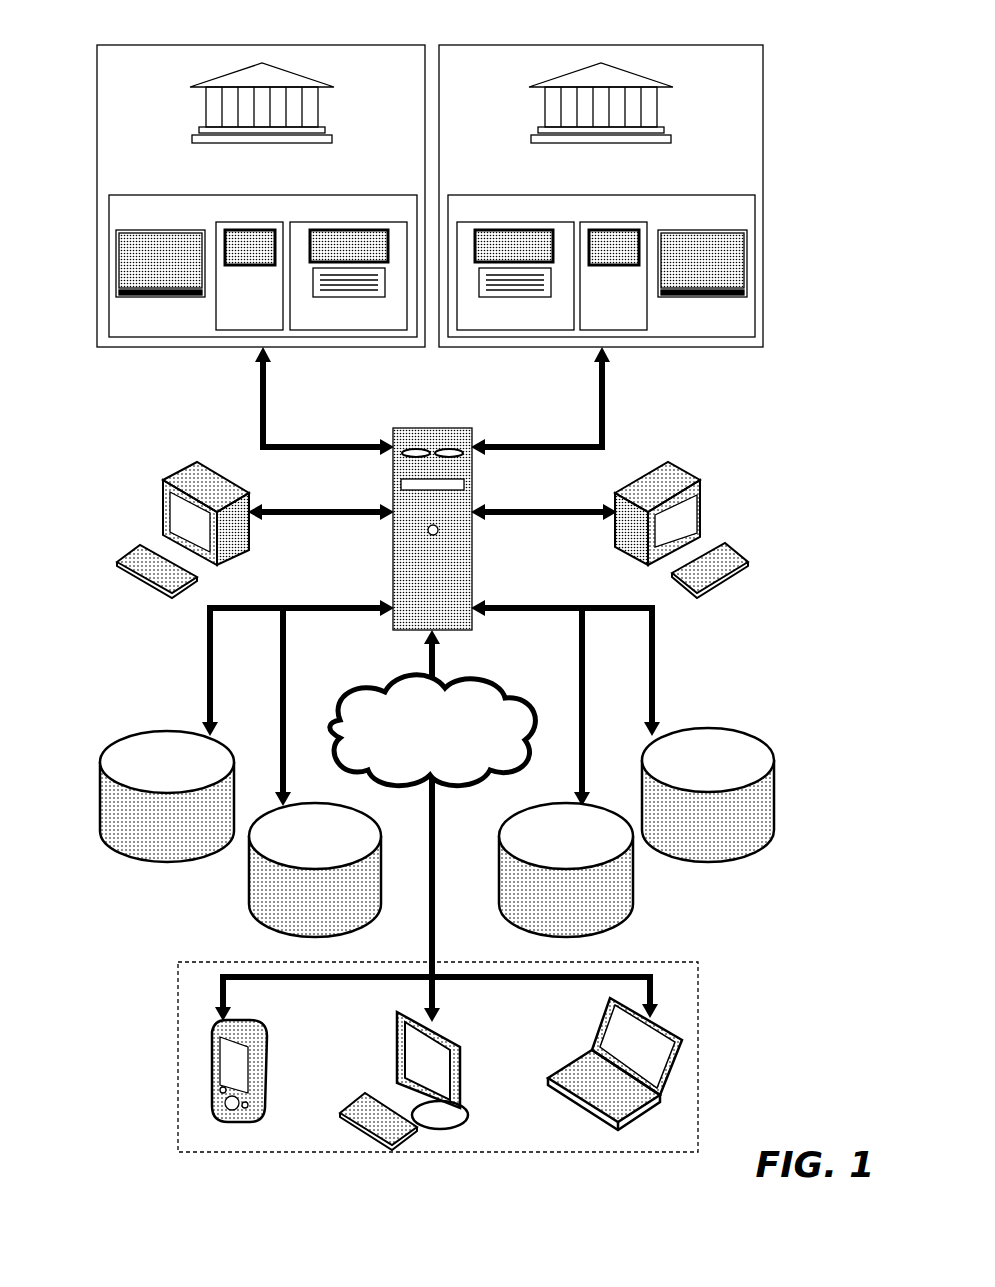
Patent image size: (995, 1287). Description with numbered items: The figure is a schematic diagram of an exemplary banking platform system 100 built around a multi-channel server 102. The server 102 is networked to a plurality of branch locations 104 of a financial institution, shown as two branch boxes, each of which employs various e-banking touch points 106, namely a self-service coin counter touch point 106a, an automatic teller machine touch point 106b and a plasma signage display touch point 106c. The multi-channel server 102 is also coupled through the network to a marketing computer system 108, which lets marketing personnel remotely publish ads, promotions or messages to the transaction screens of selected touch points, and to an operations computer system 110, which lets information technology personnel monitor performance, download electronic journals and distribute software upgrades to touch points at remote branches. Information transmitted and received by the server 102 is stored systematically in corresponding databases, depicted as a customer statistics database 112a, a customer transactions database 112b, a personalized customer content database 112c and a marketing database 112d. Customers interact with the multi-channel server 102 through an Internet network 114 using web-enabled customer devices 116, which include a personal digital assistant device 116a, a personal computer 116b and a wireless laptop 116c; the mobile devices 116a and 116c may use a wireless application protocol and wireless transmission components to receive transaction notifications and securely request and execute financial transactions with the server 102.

The system 100 is at (450, 18).
The multi-channel server 102 is at (455, 563).
The branch locations 104 is at (466, 355).
The e-banking touch points 106 is at (125, 204).
The self-service coin counter touch point 106a is at (298, 318).
The automatic teller machine touch point 106b is at (226, 322).
The plasma signage display touch point 106c is at (118, 299).
The marketing computer system 108 is at (182, 478).
The operations computer system 110 is at (677, 483).
The customer statistics database 112a is at (130, 748).
The customer transactions database 112b is at (260, 878).
The personalized customer content database 112c is at (632, 878).
The marketing database 112d is at (688, 740).
The Internet network 114 is at (475, 698).
The web-enabled customer devices 116 is at (683, 983).
The personal digital assistant device 116a is at (240, 1035).
The personal computer 116b is at (395, 1050).
The wireless laptop 116c is at (560, 1072).